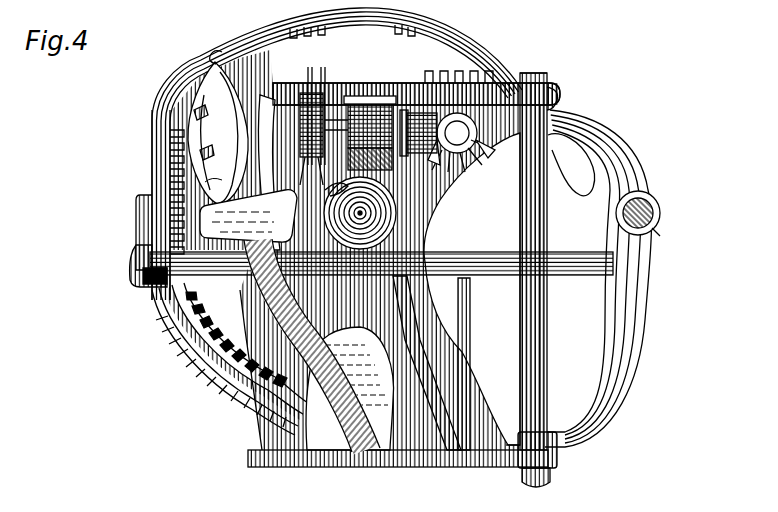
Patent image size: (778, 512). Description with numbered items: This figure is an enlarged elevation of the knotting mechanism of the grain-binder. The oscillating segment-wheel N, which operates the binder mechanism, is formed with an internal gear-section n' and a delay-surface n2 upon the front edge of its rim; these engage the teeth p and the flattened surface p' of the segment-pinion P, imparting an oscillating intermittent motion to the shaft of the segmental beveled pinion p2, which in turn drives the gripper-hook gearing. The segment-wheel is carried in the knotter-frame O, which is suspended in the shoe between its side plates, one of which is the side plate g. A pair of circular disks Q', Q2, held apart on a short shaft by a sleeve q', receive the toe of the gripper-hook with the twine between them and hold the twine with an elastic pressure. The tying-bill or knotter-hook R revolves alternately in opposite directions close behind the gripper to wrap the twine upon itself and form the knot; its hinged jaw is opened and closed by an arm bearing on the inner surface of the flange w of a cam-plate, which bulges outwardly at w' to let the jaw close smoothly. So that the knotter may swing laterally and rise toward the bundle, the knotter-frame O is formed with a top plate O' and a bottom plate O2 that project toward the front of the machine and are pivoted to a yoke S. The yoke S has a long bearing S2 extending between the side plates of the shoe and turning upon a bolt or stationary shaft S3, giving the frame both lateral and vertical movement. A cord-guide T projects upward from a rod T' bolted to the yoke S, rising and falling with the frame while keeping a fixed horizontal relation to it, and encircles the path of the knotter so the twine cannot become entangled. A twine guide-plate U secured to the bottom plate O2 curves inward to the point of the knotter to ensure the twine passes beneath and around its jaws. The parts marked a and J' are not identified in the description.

The segment-wheel N is at (337, 221).
The internal gear-section n' is at (322, 39).
The delay-surface n2 is at (152, 215).
The knotter-frame O is at (366, 250).
The top plate O' is at (416, 94).
The bottom plate O2 is at (434, 455).
The segment-pinion P is at (459, 72).
The teeth p is at (461, 142).
The flattened surface p' is at (571, 165).
The segmental beveled pinion p2 is at (418, 133).
The circular disk Q' is at (314, 109).
The circular disk Q2 is at (360, 112).
The sleeve q' is at (303, 125).
The knotter-hook R is at (218, 133).
The yoke S is at (598, 278).
The long bearing S2 is at (661, 213).
The stationary shaft S3 is at (662, 238).
The cord-guide T is at (149, 205).
The rod T' is at (381, 263).
The twine guide-plate U is at (248, 216).
The belt a is at (312, 339).
The side plate g is at (360, 213).
The frame post J' is at (527, 280).
The flange w is at (213, 173).
The outward bulge w' is at (218, 48).